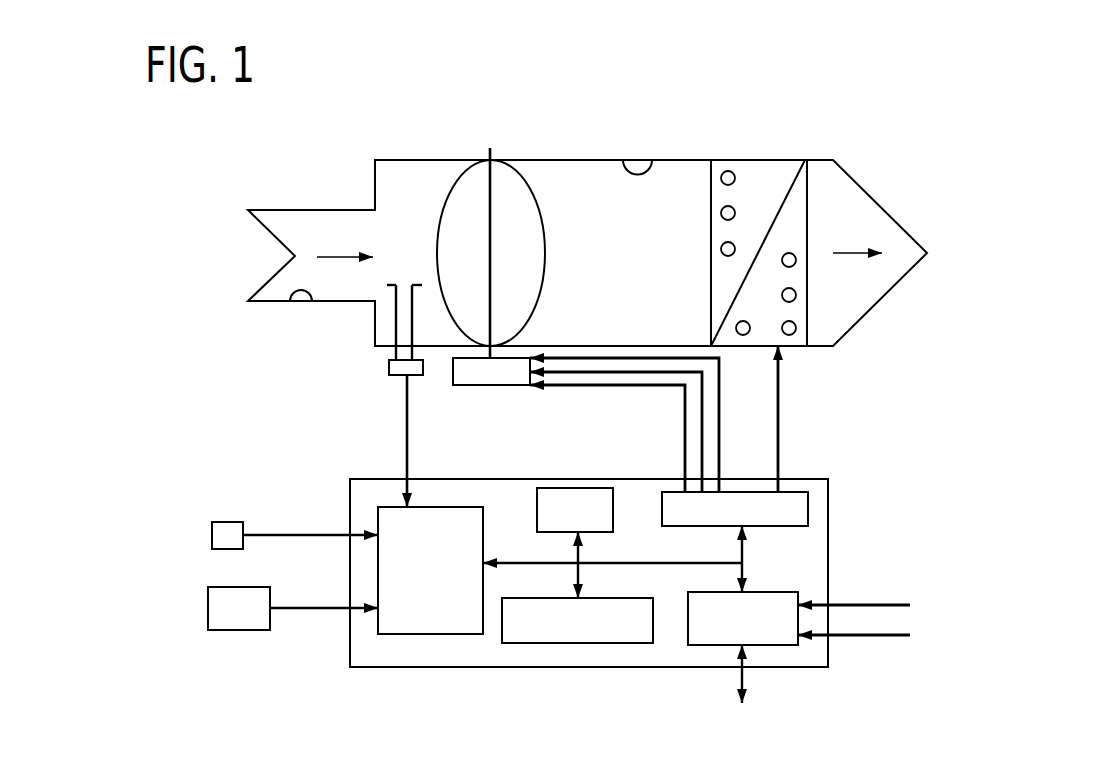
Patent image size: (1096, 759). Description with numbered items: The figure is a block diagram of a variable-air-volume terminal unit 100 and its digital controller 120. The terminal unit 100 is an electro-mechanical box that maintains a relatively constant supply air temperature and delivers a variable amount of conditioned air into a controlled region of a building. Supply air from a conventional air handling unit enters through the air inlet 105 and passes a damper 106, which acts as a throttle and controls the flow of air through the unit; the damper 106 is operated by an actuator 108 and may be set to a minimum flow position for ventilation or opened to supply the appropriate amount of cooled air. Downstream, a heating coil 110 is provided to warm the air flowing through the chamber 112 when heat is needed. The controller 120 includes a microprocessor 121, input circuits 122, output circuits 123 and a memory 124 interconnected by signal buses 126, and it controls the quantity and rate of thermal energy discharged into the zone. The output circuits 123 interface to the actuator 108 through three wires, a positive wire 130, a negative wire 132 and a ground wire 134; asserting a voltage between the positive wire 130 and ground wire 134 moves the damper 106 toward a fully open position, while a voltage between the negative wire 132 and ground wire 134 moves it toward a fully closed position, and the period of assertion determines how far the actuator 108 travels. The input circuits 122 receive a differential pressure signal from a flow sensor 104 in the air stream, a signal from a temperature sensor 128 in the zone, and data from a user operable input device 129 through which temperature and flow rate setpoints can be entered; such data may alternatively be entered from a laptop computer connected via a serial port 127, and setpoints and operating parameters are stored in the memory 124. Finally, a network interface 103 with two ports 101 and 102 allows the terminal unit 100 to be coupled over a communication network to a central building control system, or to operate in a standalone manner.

The variable-air-volume terminal unit 100 is at (285, 155).
The port 101 is at (880, 605).
The port 102 is at (872, 637).
The network interface 103 is at (778, 590).
The flow sensor 104 is at (396, 373).
The air inlet 105 is at (291, 301).
The damper 106 is at (503, 172).
The actuator 108 is at (477, 382).
The heating coil 110 is at (750, 172).
The chamber 112 is at (652, 158).
The controller 120 is at (372, 477).
The microprocessor 121 is at (582, 488).
The input circuits 122 is at (453, 630).
The output circuits 123 is at (800, 517).
The memory 124 is at (560, 643).
The signal buses 126 is at (678, 565).
The serial port 127 is at (745, 672).
The temperature sensor 128 is at (227, 532).
The user operable input device 129 is at (232, 623).
The positive wire 130 is at (719, 412).
The negative wire 132 is at (702, 442).
The ground wire 134 is at (685, 462).